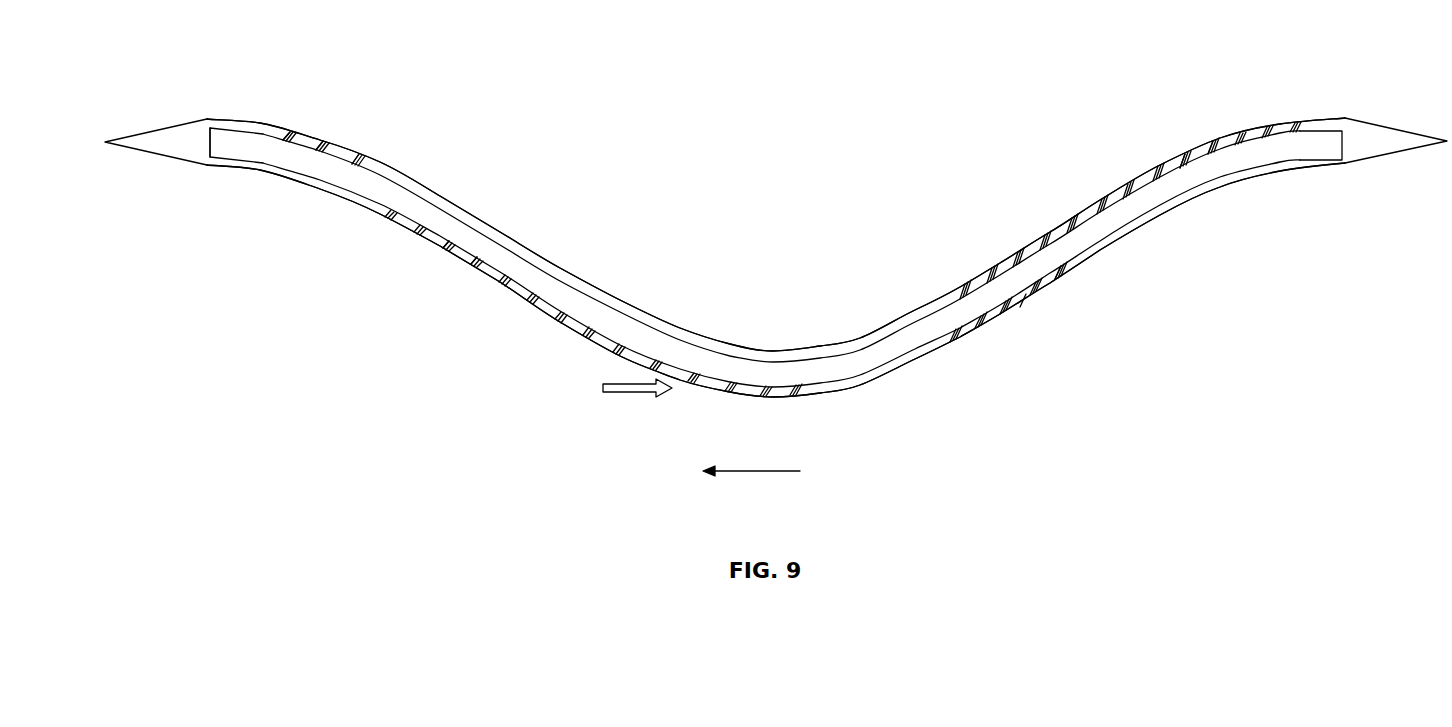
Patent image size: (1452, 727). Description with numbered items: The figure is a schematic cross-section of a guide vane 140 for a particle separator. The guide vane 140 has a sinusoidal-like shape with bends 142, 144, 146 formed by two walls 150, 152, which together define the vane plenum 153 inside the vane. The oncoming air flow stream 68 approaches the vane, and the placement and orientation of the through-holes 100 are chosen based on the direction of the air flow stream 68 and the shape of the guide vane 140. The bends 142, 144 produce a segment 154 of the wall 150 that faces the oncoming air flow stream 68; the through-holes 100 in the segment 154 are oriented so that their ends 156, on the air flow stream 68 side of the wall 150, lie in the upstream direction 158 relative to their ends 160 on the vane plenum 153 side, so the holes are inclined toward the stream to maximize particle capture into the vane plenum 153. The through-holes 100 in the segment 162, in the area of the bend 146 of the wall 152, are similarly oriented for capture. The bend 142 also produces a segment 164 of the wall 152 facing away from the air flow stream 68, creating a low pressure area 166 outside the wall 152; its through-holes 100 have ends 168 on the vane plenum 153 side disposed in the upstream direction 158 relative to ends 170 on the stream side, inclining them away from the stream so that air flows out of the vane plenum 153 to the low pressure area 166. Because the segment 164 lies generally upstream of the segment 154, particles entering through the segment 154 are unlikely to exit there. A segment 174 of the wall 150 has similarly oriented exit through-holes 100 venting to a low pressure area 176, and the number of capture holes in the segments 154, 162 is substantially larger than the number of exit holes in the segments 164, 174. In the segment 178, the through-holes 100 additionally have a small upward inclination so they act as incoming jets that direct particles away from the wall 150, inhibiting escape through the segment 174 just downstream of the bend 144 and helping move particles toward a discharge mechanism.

The air flow stream 68 is at (643, 393).
The through-holes 100 is at (365, 187).
The guide vane 140 is at (484, 209).
The bend 142 is at (302, 176).
The bend 144 is at (773, 357).
The bend 146 is at (1263, 172).
The wall 150 is at (873, 384).
The wall 152 is at (915, 311).
The vane plenum 153 is at (618, 330).
The segment 154 is at (537, 308).
The ends 156 is at (587, 338).
The upstream direction 158 is at (760, 471).
The ends 160 is at (653, 372).
The segment 162 is at (1110, 196).
The segment 164 is at (420, 180).
The low pressure area 166 is at (374, 143).
The ends 168 is at (262, 133).
The ends 170 is at (277, 120).
The segment 174 is at (970, 334).
The low pressure area 176 is at (1009, 363).
The segment 178 is at (777, 396).